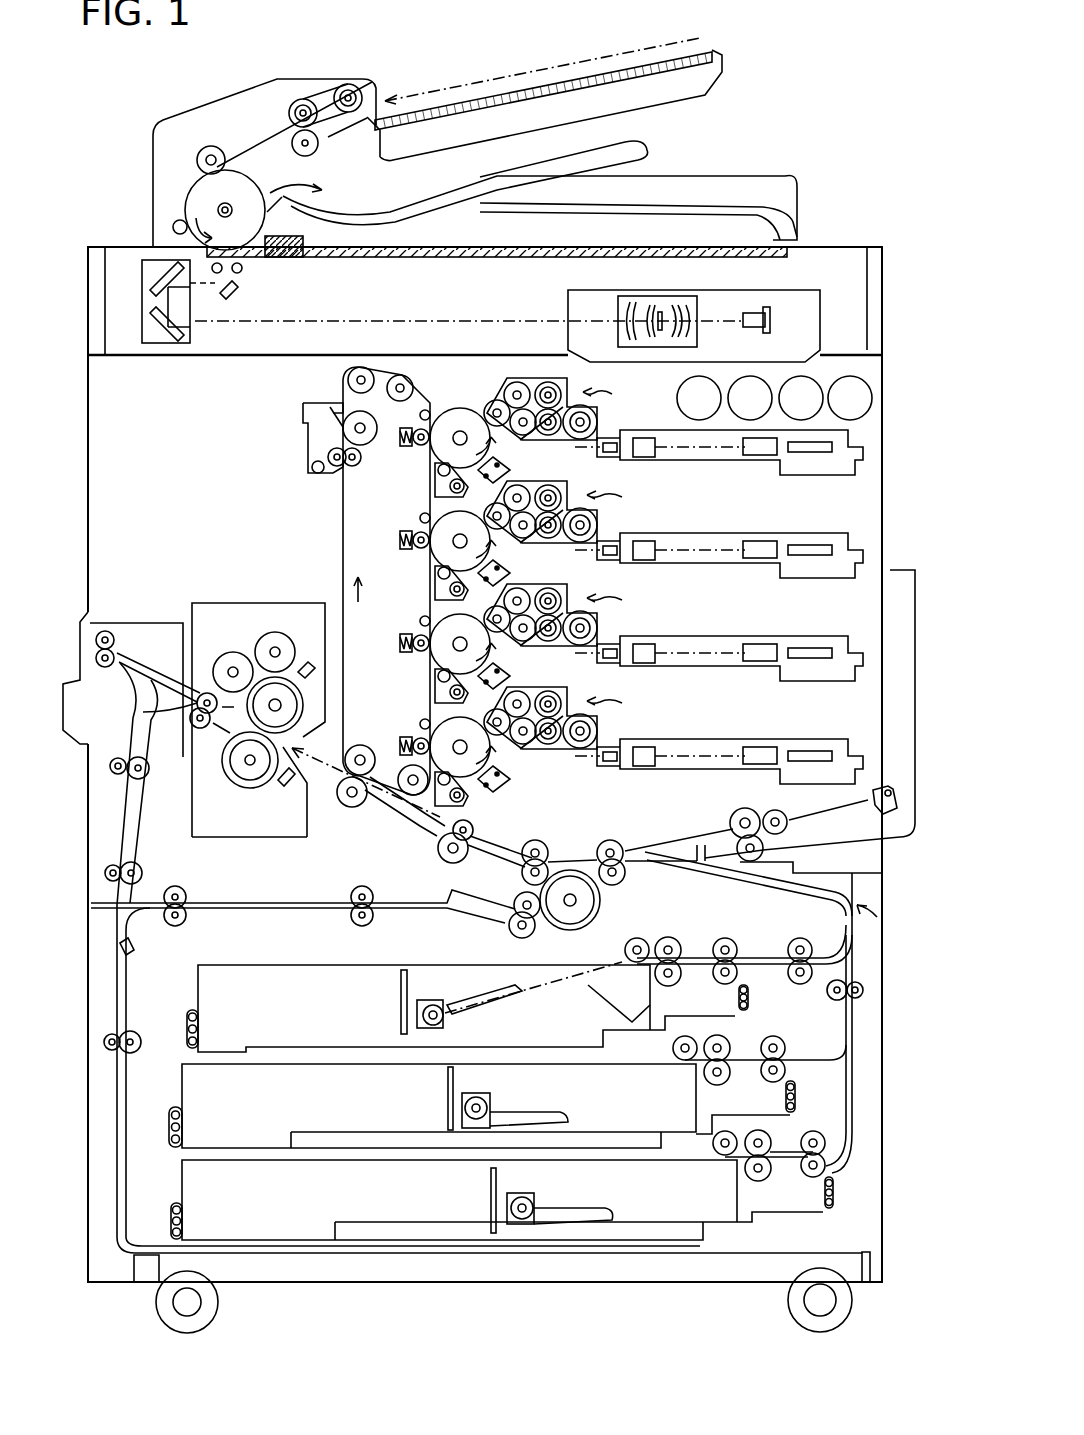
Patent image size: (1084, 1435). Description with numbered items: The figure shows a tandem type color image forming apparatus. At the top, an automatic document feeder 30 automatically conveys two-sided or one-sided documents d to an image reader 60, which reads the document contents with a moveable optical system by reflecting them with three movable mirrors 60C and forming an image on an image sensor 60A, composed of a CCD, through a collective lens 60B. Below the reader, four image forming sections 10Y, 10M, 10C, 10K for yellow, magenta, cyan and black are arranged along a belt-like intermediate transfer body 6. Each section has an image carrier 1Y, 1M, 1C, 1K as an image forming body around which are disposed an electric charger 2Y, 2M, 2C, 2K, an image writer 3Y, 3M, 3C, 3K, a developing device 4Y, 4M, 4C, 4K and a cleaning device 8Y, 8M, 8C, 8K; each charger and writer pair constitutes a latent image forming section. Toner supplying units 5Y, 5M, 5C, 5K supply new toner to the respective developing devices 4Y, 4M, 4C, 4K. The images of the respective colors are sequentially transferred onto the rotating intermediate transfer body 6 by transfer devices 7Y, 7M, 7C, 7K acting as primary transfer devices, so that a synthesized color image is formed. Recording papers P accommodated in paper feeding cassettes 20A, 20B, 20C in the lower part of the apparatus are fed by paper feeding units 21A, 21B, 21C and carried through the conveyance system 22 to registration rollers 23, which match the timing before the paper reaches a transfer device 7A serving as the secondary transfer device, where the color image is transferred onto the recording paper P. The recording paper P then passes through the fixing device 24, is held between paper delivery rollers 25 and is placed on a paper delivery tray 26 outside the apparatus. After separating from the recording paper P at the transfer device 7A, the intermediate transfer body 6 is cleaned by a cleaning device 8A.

The document d is at (275, 150).
The automatic document feeder 30 is at (806, 150).
The image reader 60 is at (845, 236).
The image sensor 60A is at (772, 320).
The collective lens 60B is at (637, 297).
The movable mirrors 60C is at (177, 368).
The cleaning device 8A is at (323, 443).
The intermediate transfer body 6 is at (343, 530).
The fixing device 24 is at (225, 617).
The paper delivery tray 26 is at (91, 621).
The paper delivery rollers 25 is at (115, 643).
The image carrier 1Y is at (451, 414).
The image carrier 1M is at (429, 537).
The image carrier 1C is at (429, 640).
The image carrier 1K is at (443, 734).
The electric charger 2Y is at (509, 460).
The electric charger 2M is at (517, 570).
The electric charger 2C is at (515, 674).
The electric charger 2K is at (527, 776).
The image writer 3Y is at (728, 476).
The image writer 3M is at (730, 576).
The image writer 3C is at (730, 633).
The image writer 3K is at (730, 737).
The developing device 4Y is at (510, 384).
The developing device 4M is at (542, 502).
The developing device 4C is at (542, 605).
The developing device 4K is at (542, 707).
The toner supplying unit 5Y is at (712, 410).
The toner supplying unit 5M is at (764, 410).
The toner supplying unit 5C is at (814, 410).
The toner supplying unit 5K is at (863, 410).
The transfer device 7Y is at (420, 450).
The transfer device 7M is at (403, 556).
The transfer device 7C is at (393, 652).
The transfer device 7K is at (393, 733).
The cleaning device 8Y is at (435, 488).
The cleaning device 8M is at (423, 587).
The cleaning device 8C is at (425, 685).
The cleaning device 8K is at (490, 795).
The image forming section 10Y is at (626, 392).
The image forming section 10M is at (638, 493).
The image forming section 10C is at (636, 596).
The image forming section 10K is at (636, 699).
The transfer device 7A is at (361, 810).
The registration rollers 23 is at (445, 852).
The paper feeding unit 21A is at (647, 943).
The paper feeding unit 21B is at (705, 1040).
The paper feeding unit 21C is at (745, 1125).
The recording paper P is at (533, 990).
The conveyance system 22 is at (870, 917).
The paper feeding cassette 20A is at (298, 1015).
The paper feeding cassette 20B is at (298, 1113).
The paper feeding cassette 20C is at (298, 1220).